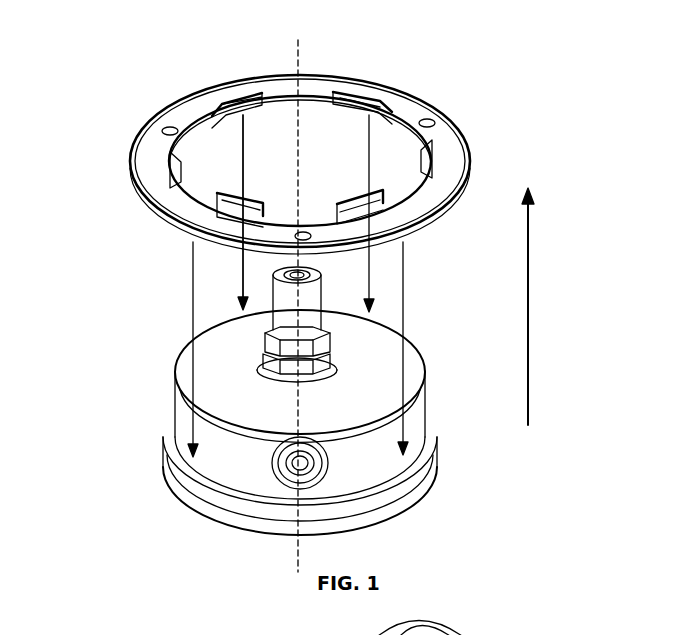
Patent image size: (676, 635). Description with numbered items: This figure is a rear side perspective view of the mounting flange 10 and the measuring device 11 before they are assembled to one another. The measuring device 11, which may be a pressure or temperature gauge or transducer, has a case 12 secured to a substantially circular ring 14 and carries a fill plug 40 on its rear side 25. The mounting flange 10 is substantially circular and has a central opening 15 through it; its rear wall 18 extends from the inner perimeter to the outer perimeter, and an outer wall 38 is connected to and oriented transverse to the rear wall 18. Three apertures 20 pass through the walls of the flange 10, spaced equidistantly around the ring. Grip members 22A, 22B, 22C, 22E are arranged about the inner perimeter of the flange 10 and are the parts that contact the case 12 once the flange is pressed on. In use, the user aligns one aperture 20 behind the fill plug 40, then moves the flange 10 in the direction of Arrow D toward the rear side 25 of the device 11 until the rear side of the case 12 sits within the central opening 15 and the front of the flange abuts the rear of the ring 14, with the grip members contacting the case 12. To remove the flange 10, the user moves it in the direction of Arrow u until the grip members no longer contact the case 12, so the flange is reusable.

The mounting flange 10 is at (288, 140).
The measuring device 11 is at (294, 401).
The case 12 is at (418, 397).
The ring 14 is at (430, 481).
The central opening 15 is at (395, 132).
The rear wall 18 is at (322, 142).
The aperture 20 is at (170, 122).
The grip member 22A is at (372, 93).
The grip member 22B is at (236, 98).
The grip member 22C is at (240, 210).
The grip member 22E is at (383, 203).
The rear side 25 is at (178, 322).
The outer wall 38 is at (450, 118).
The fill plug 40 is at (287, 463).
The central axis A is at (298, 45).
The Arrow D is at (403, 283).
The Arrow U u is at (536, 306).